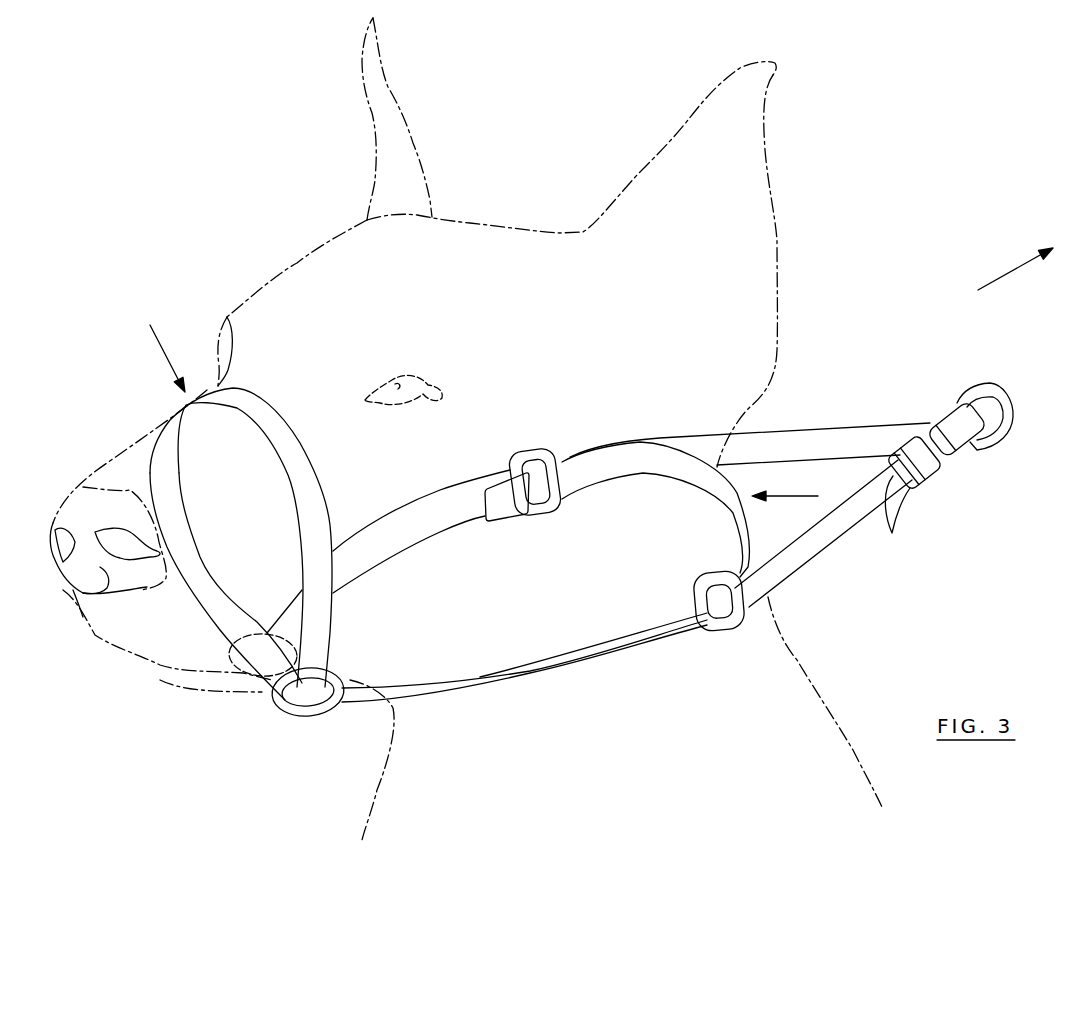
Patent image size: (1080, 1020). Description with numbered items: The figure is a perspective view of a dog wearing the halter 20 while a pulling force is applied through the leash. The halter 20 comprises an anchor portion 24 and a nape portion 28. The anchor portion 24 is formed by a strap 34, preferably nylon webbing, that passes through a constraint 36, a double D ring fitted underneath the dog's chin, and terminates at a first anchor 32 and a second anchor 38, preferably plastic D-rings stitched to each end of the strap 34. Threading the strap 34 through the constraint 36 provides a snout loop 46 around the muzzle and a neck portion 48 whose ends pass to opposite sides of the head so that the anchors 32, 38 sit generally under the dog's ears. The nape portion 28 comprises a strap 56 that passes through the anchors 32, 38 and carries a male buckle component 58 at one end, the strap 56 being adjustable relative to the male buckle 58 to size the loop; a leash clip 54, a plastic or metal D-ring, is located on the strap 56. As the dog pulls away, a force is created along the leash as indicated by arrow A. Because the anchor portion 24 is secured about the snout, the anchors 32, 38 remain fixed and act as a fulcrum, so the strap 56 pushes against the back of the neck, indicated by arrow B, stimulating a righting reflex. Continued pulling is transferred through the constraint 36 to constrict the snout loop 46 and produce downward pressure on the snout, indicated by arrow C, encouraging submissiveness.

The halter 20 is at (559, 535).
The anchor portion 24 is at (524, 680).
The nape portion 28 is at (850, 548).
The first anchor 32 is at (550, 500).
The strap 34 is at (648, 648).
The constraint 36 is at (282, 700).
The second anchor 38 is at (740, 633).
The snout loop 46 is at (251, 533).
The neck portion 48 is at (489, 619).
The leash clip 54 is at (1020, 437).
The strap 56 is at (807, 428).
The male buckle component 58 is at (912, 497).
The arrow A is at (1015, 269).
The arrow B is at (794, 495).
The arrow C is at (161, 347).